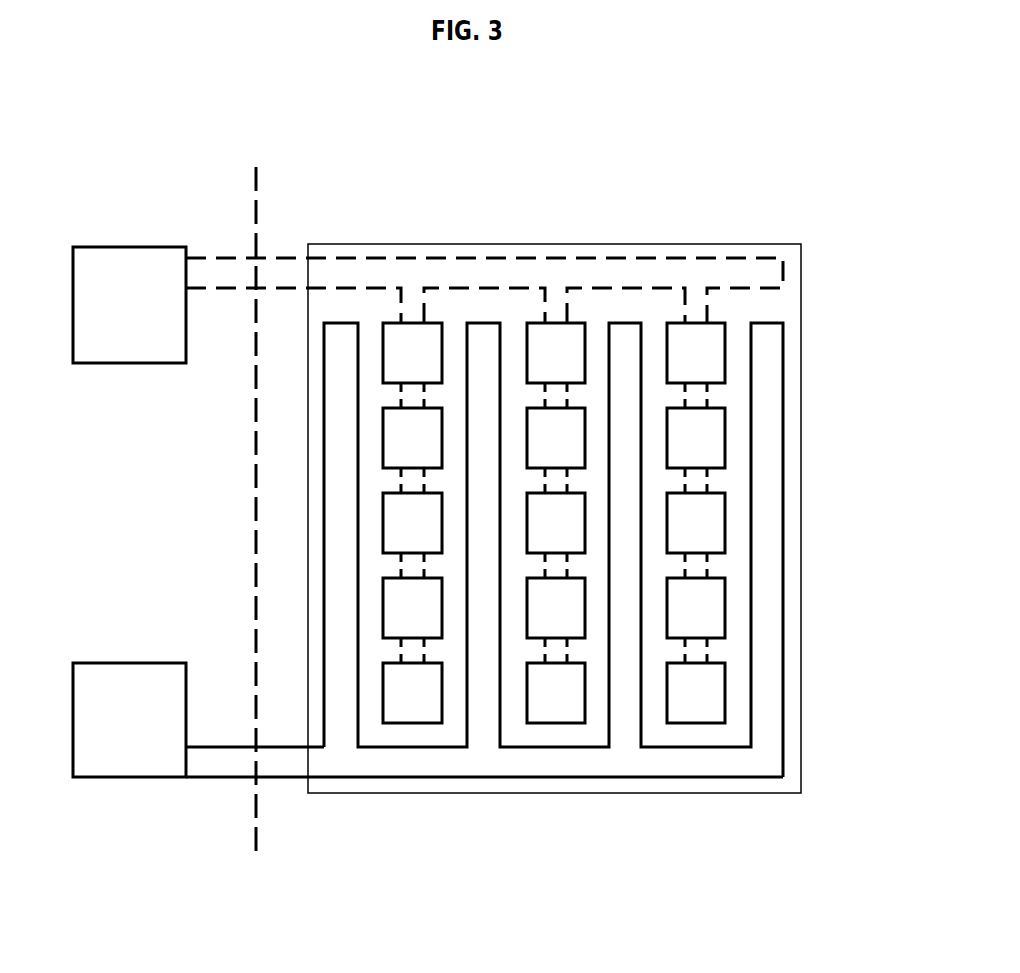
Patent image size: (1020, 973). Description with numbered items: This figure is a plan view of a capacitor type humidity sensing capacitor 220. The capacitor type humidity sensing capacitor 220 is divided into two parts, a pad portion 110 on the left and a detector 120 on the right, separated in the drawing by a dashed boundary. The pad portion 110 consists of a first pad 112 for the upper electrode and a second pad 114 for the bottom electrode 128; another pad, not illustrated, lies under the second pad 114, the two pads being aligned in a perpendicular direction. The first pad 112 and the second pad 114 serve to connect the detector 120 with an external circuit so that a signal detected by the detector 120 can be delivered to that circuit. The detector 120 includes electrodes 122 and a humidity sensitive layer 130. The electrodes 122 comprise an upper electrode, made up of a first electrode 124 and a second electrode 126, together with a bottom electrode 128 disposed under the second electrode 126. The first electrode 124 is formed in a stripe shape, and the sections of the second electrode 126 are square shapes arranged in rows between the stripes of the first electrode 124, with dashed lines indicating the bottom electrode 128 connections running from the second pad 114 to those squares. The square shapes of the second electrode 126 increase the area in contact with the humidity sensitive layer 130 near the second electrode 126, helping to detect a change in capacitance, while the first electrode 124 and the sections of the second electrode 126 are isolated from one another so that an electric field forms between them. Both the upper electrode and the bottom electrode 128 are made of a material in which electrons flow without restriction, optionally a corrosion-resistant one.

The capacitor type humidity sensing capacitor 220 is at (431, 113).
The pad portion 110 is at (164, 182).
The first pad 112 is at (129, 762).
The second pad 114 is at (129, 348).
The detector 120 is at (633, 182).
The electrodes 122 is at (743, 876).
The first electrode 124 is at (652, 766).
The second electrode 126 is at (715, 695).
The bottom electrode 128 is at (767, 273).
The humidity sensitive layer 130 is at (545, 730).